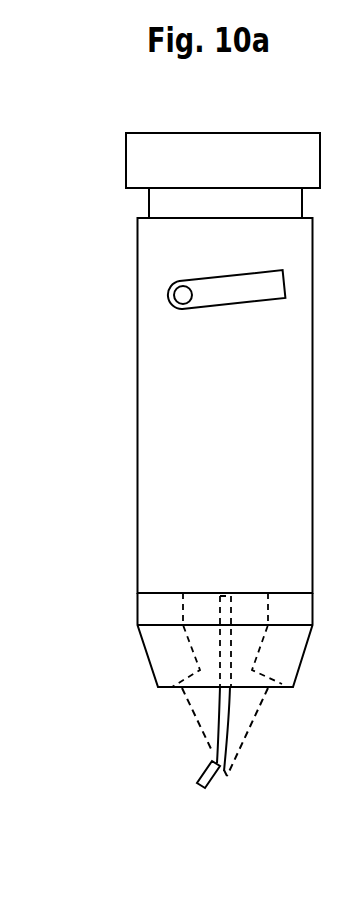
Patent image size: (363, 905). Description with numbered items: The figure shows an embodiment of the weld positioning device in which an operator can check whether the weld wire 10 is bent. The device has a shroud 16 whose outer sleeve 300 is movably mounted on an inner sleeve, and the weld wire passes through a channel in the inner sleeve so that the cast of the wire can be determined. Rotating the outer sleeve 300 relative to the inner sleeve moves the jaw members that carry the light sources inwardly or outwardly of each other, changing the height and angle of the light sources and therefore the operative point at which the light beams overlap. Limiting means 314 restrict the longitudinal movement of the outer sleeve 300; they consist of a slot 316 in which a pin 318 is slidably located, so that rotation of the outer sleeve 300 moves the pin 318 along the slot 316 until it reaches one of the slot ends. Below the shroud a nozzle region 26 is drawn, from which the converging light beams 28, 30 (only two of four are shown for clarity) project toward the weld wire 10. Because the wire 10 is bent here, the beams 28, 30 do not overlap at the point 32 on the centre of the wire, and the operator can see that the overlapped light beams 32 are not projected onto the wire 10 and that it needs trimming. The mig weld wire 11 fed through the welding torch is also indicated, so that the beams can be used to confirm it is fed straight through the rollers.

The weld wire 10 is at (207, 765).
The mig weld wire 11 is at (196, 788).
The shroud 16 is at (129, 467).
The nozzle section 26 is at (178, 688).
The converging light beam 28 is at (203, 727).
The converging light beam 30 is at (250, 730).
The overlap point 32 is at (228, 778).
The outer sleeve 300 is at (153, 508).
The limiting means 314 is at (176, 281).
The slot 316 is at (222, 302).
The pin 318 is at (180, 307).